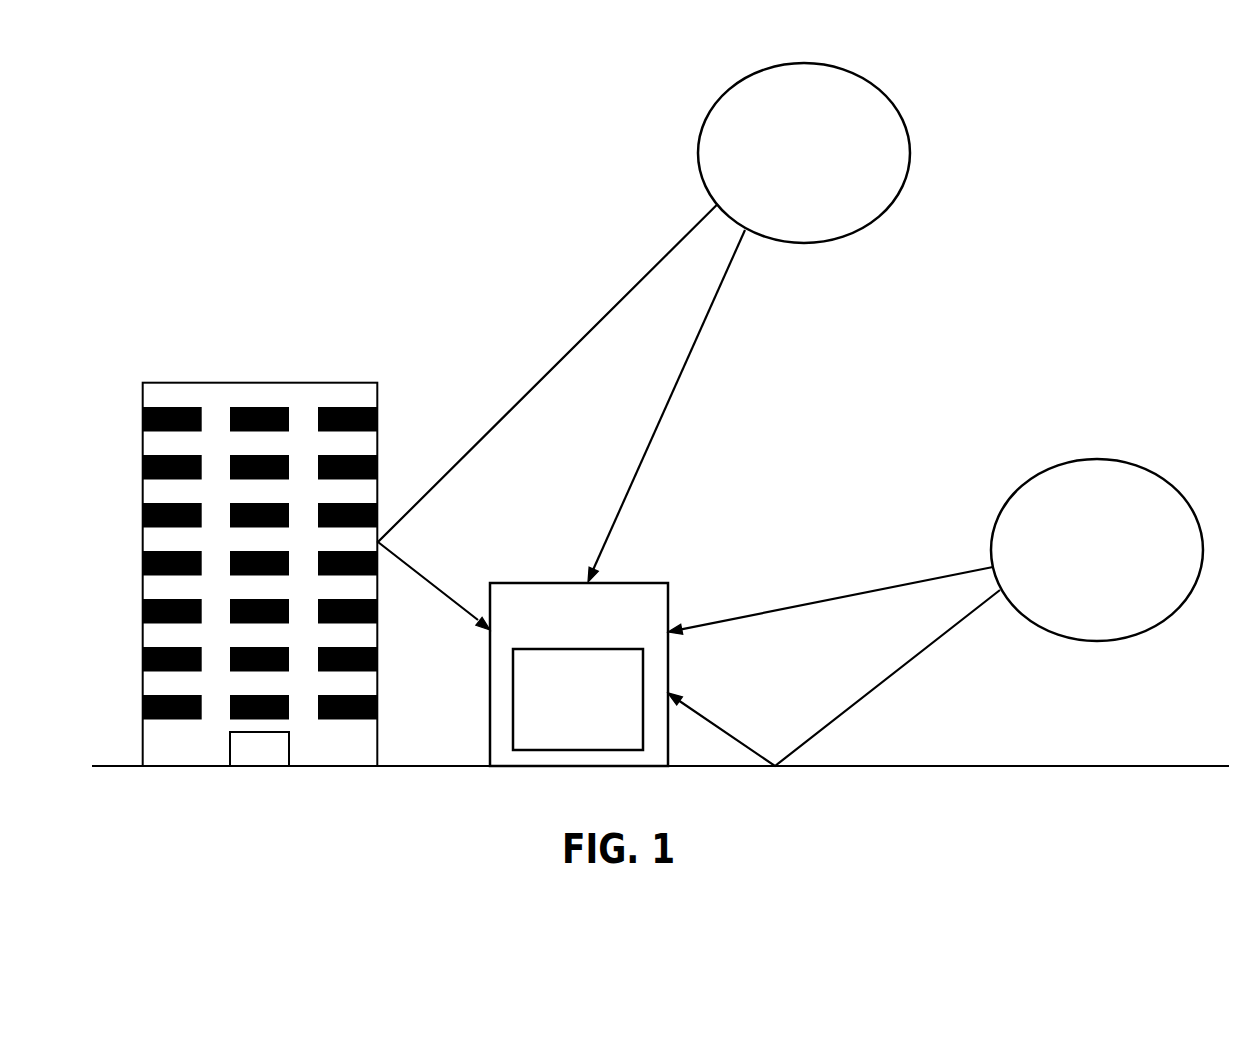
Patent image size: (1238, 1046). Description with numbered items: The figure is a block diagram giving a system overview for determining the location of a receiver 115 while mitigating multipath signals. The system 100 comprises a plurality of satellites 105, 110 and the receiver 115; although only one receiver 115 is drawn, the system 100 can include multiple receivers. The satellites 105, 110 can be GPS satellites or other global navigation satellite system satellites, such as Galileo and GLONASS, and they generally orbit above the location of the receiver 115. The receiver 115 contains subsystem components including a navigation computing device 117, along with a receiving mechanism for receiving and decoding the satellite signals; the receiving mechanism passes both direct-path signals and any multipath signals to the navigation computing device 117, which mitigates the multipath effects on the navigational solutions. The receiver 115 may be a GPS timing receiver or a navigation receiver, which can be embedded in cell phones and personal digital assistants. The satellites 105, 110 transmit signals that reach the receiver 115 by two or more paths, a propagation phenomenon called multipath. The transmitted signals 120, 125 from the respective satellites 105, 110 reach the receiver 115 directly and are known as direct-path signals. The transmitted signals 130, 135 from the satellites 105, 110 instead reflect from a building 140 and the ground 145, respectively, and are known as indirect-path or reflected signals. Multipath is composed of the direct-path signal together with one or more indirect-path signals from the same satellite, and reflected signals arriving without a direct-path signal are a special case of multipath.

The system 100 is at (142, 177).
The satellite 105 is at (789, 176).
The satellite 110 is at (1082, 572).
The receiver 115 is at (632, 628).
The navigation computing device 117 is at (563, 743).
The transmitted signal 120 is at (675, 380).
The transmitted signal 125 is at (840, 595).
The transmitted signal 130 is at (518, 402).
The transmitted signal 135 is at (873, 688).
The building 140 is at (271, 383).
The ground 145 is at (1162, 766).